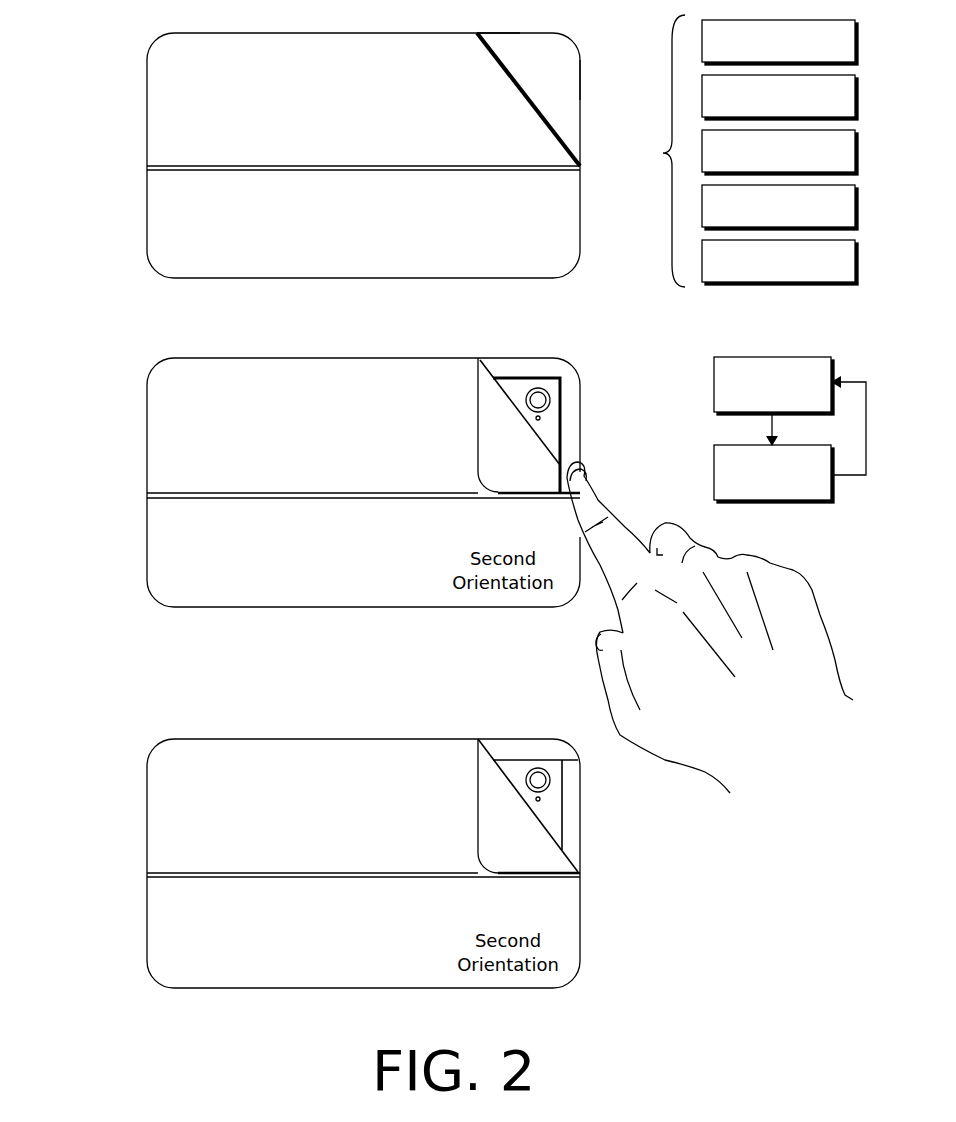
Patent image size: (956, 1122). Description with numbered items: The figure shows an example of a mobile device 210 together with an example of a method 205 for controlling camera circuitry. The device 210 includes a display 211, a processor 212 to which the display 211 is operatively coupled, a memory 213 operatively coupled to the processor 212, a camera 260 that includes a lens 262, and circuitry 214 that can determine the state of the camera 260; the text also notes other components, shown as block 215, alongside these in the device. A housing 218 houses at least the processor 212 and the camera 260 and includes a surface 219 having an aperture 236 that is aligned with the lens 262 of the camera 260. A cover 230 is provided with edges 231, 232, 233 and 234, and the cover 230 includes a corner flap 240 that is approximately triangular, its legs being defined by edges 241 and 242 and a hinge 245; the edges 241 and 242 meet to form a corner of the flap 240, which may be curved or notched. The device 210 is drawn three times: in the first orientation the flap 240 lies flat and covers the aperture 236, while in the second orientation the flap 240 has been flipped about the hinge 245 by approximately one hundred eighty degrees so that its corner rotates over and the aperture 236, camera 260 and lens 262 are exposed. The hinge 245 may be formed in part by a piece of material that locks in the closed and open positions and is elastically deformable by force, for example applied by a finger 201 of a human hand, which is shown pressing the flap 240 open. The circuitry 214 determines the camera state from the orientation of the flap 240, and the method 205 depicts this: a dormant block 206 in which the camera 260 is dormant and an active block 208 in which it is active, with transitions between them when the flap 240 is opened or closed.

The finger 201 is at (610, 475).
The method 205 is at (822, 348).
The dormant block 206 is at (813, 407).
The active block 208 is at (813, 495).
The device 210 is at (233, 22).
The display 211 is at (828, 50).
The processor 212 is at (838, 105).
The memory 213 is at (831, 160).
The circuitry 214 is at (832, 215).
The other components 215 is at (821, 270).
The housing 218 is at (581, 388).
The surface 219 is at (567, 362).
The cover 230 is at (380, 114).
The edge 231 is at (412, 33).
The edge 232 is at (582, 180).
The edge 233 is at (400, 280).
The edge 234 is at (147, 192).
The aperture 236 is at (527, 389).
The flap 240 is at (529, 459).
The edge 241 is at (521, 33).
The edge 242 is at (583, 85).
The hinge 245 is at (526, 100).
The camera 260 is at (554, 366).
The lens 262 is at (538, 386).